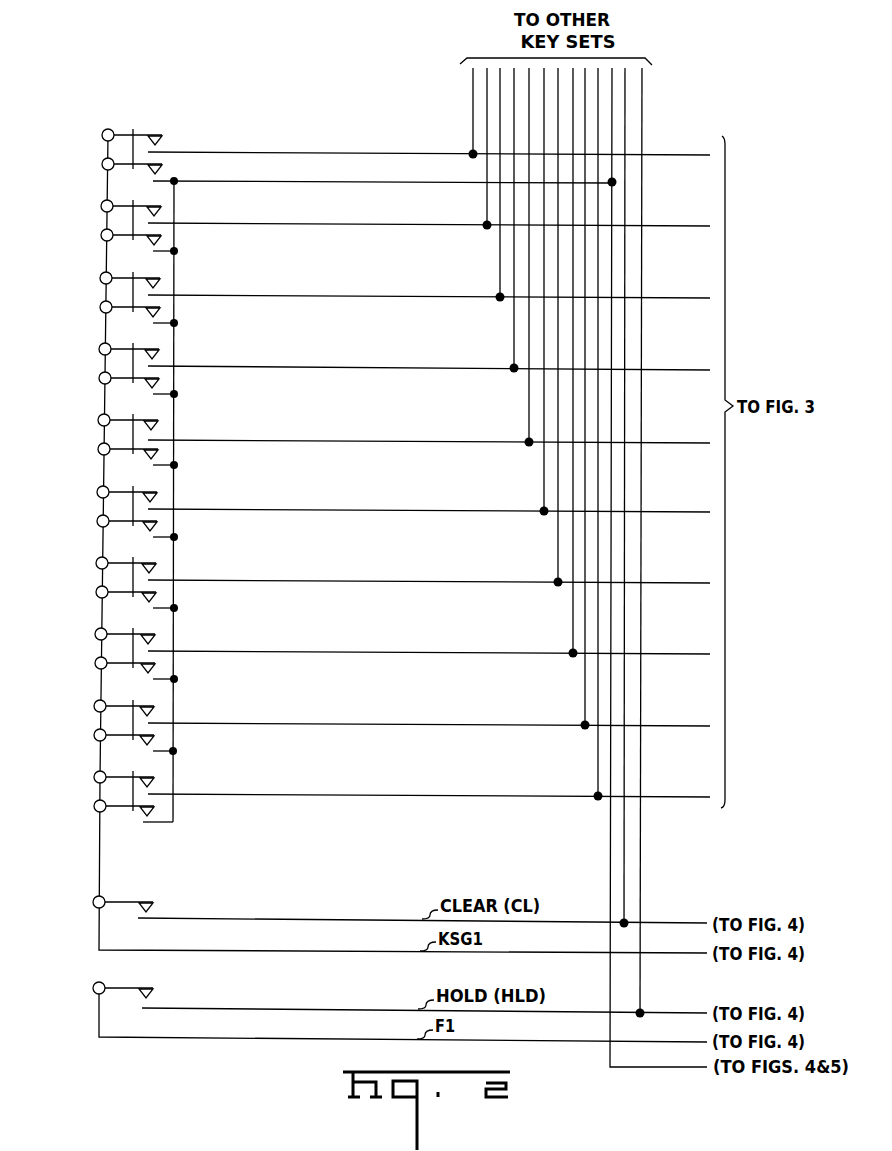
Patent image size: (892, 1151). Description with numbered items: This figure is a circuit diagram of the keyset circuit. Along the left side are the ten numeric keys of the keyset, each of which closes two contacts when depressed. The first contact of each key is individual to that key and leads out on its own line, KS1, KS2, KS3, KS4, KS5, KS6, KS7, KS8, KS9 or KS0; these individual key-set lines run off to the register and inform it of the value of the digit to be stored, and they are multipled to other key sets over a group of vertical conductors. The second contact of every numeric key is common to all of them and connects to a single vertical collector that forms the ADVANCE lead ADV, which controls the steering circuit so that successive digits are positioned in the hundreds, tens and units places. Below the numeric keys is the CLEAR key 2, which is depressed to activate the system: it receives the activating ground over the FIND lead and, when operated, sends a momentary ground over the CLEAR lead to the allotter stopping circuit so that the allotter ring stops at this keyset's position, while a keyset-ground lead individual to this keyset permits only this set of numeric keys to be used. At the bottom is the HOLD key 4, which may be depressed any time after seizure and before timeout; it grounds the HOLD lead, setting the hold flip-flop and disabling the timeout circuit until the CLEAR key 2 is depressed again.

The CLEAR key 2 is at (118, 902).
The HOLD key 4 is at (121, 988).
The numeric key contact KS1 is at (253, 152).
The numeric key contact KS2 is at (253, 223).
The numeric key contact KS3 is at (253, 295).
The numeric key contact KS4 is at (253, 366).
The numeric key contact KS5 is at (253, 440).
The numeric key contact KS6 is at (253, 509).
The numeric key contact KS7 is at (253, 580).
The numeric key contact KS8 is at (253, 651).
The numeric key contact KS9 is at (253, 723).
The numeric key contact KS0 is at (253, 794).
The ADVANCE lead ADV is at (256, 181).